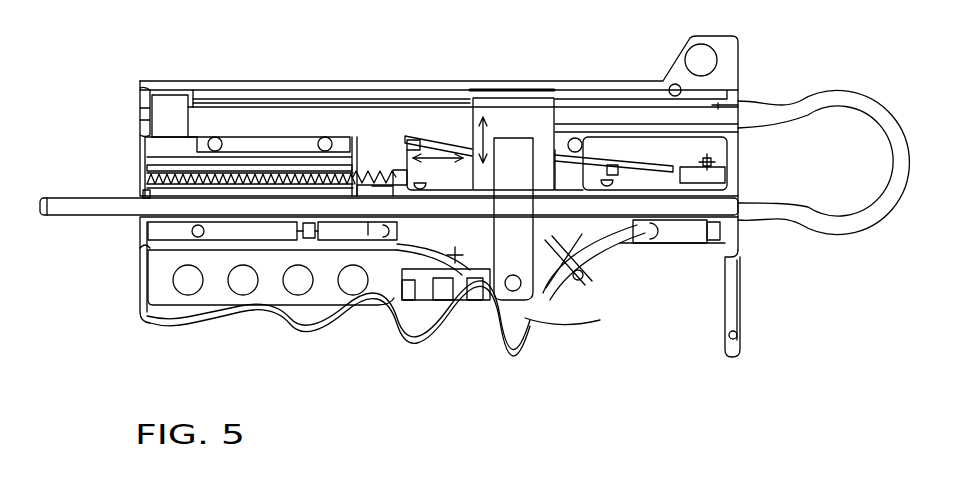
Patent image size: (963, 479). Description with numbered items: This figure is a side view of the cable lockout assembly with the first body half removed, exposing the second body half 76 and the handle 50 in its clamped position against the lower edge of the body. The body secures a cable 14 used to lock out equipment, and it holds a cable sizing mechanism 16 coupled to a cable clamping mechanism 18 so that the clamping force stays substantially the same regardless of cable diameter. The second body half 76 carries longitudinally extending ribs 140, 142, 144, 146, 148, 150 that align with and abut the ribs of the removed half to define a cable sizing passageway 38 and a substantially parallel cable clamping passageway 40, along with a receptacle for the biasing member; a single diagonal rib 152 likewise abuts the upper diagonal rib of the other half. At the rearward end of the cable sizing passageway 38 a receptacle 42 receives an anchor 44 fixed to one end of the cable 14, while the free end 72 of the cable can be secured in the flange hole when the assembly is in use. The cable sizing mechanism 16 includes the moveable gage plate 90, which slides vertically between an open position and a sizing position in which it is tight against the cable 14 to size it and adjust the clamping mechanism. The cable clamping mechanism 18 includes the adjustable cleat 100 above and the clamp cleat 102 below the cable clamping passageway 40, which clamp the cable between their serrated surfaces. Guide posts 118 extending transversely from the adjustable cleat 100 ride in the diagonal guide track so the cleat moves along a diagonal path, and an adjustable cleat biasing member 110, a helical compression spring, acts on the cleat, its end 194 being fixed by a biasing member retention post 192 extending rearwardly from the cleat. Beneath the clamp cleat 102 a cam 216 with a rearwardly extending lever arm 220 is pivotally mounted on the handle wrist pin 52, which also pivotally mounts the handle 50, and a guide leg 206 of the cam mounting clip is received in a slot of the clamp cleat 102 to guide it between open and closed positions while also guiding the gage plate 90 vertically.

The cable 14 is at (887, 90).
The cable sizing mechanism 16 is at (573, 90).
The cable clamping mechanism 18 is at (612, 157).
The cable sizing passageway 38 is at (718, 106).
The cable clamping passageway 40 is at (143, 192).
The receptacle 42 is at (144, 92).
The anchor 44 is at (168, 118).
The handle 50 is at (150, 325).
The handle wrist pin 52 is at (513, 290).
The free end 72 is at (40, 206).
The second body half 76 is at (140, 246).
The moveable gage plate 90 is at (512, 113).
The adjustable cleat 100 is at (422, 146).
The clamp cleat 102 is at (552, 226).
The adjustable cleat biasing member 110 is at (380, 184).
The guide posts 118 is at (403, 140).
The rib 140 is at (207, 98).
The rib 142 is at (228, 138).
The rib 144 is at (178, 172).
The rib 146 is at (167, 220).
The rib 148 is at (272, 172).
The rib 150 is at (298, 163).
The single diagonal rib 152 is at (667, 173).
The biasing member retention post 192 is at (372, 196).
The end 194 is at (368, 222).
The guide leg 206 is at (540, 290).
The cam 216 is at (546, 294).
The lever arm 220 is at (443, 295).